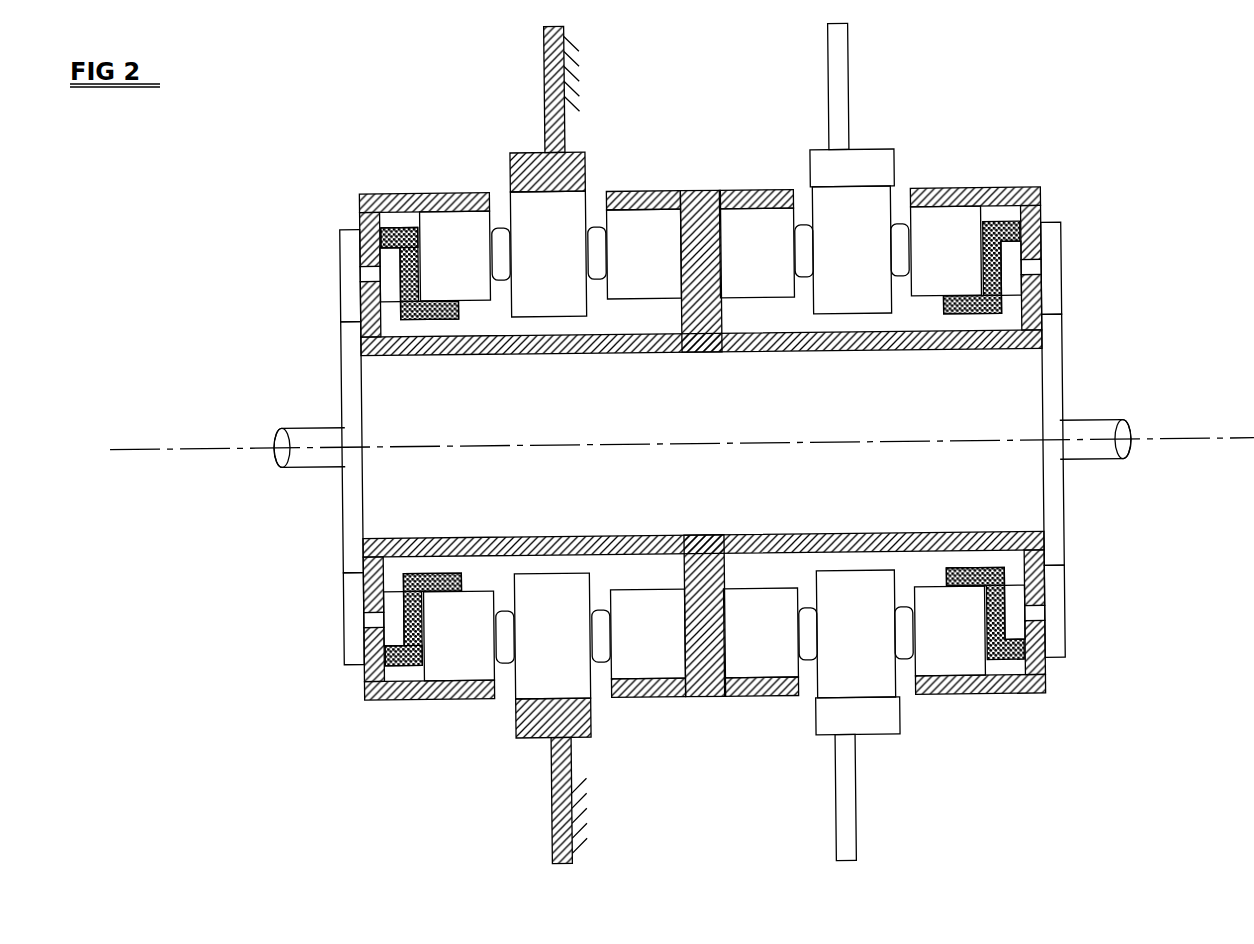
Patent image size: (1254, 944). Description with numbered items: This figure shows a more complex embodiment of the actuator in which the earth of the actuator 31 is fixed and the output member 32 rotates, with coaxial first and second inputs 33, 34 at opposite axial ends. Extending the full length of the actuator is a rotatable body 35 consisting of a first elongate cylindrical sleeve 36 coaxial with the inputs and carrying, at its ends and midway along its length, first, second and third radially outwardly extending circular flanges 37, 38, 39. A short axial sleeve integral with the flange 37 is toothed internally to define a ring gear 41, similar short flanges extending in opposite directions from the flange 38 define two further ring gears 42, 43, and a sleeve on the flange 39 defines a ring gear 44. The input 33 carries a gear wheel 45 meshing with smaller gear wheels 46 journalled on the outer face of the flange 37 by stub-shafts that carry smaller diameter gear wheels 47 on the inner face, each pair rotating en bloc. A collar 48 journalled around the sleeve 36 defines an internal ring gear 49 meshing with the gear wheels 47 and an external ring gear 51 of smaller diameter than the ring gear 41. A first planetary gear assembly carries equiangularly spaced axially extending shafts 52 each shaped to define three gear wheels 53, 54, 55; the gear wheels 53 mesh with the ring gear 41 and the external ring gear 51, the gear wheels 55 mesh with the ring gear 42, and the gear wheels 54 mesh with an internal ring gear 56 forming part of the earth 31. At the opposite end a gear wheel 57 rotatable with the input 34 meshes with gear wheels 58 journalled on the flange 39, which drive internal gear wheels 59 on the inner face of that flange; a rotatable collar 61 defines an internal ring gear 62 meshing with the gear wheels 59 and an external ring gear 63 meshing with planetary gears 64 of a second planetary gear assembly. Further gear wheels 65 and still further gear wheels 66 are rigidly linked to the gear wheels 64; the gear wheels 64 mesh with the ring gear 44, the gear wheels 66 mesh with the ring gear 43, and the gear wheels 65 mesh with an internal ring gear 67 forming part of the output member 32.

The earth of the actuator 31 is at (563, 124).
The output member of the actuator 32 is at (847, 81).
The first input 33 is at (290, 451).
The second input 34 is at (1100, 434).
The rotatable body 35 is at (1048, 184).
The first elongate cylindrical sleeve 36 is at (851, 342).
The first circular flange 37 is at (374, 214).
The second circular flange 38 is at (708, 200).
The third circular flange 39 is at (1042, 216).
The ring gear 41 is at (446, 200).
The ring gear 42 is at (648, 191).
The ring gear 43 is at (778, 193).
The ring gear 44 is at (950, 196).
The gear wheel 45 is at (353, 374).
The smaller gear wheels 46 is at (354, 248).
The smaller diameter gear wheels 47 is at (394, 287).
The collar 48 is at (432, 267).
The internal ring gear 49 is at (389, 224).
The external ring gear 51 is at (438, 317).
The axially extending shafts 52 is at (504, 245).
The gear wheels 53 is at (457, 446).
The gear wheels 54 is at (550, 445).
The gear wheels 55 is at (646, 444).
The internal ring gear 56 is at (545, 155).
The gear wheel 57 is at (1056, 384).
The gear wheels 58 is at (1057, 299).
The internal gear wheels 59 is at (1016, 305).
The rotatable collar 61 is at (1027, 271).
The internal ring gear 62 is at (1005, 223).
The external ring gear 63 is at (966, 323).
The planetary gears 64 is at (948, 441).
The gear wheels 65 is at (853, 442).
The gear wheels 66 is at (759, 443).
The internal ring gear 67 is at (890, 152).